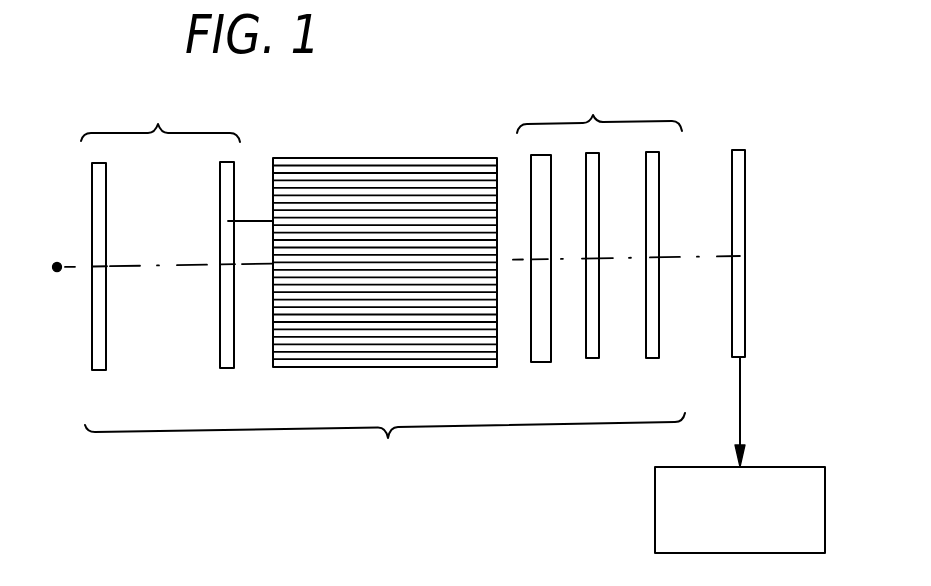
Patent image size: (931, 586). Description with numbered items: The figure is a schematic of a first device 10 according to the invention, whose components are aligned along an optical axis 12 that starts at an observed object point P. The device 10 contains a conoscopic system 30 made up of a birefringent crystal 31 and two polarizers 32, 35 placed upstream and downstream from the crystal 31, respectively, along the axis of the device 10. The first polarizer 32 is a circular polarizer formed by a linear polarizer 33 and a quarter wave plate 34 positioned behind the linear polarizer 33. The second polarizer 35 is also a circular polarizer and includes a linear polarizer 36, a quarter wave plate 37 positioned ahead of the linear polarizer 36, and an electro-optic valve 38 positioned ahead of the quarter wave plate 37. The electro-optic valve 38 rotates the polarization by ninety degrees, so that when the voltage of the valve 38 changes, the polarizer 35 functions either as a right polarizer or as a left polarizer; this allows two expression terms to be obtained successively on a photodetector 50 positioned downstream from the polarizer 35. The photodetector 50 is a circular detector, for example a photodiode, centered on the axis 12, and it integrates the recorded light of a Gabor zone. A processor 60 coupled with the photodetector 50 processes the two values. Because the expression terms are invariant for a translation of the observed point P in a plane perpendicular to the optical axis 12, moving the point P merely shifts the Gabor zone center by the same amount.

The device 10 is at (500, 112).
The observed point P is at (52, 251).
The optical axis 12 is at (156, 262).
The conoscopic system 30 is at (385, 443).
The birefringent crystal 31 is at (347, 178).
The first polarizer 32 is at (160, 114).
The linear polarizer 33 is at (93, 328).
The quarter wave plate 34 is at (221, 333).
The second polarizer 35 is at (599, 104).
The linear polarizer 36 is at (659, 191).
The quarter wave plate 37 is at (599, 357).
The electro-optic valve 38 is at (531, 356).
The photodetector 50 is at (745, 212).
The processor 60 is at (790, 467).